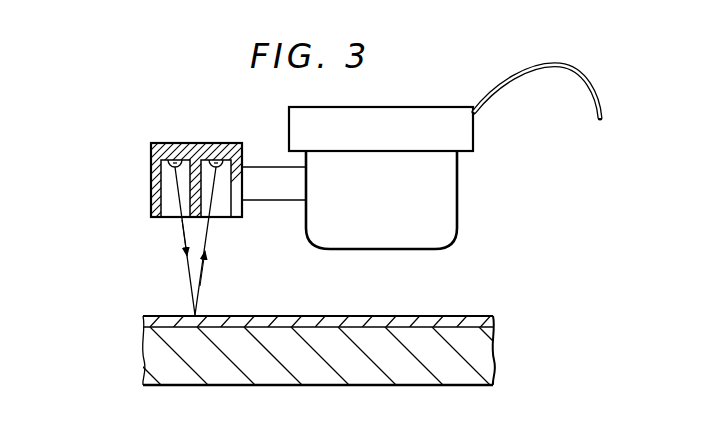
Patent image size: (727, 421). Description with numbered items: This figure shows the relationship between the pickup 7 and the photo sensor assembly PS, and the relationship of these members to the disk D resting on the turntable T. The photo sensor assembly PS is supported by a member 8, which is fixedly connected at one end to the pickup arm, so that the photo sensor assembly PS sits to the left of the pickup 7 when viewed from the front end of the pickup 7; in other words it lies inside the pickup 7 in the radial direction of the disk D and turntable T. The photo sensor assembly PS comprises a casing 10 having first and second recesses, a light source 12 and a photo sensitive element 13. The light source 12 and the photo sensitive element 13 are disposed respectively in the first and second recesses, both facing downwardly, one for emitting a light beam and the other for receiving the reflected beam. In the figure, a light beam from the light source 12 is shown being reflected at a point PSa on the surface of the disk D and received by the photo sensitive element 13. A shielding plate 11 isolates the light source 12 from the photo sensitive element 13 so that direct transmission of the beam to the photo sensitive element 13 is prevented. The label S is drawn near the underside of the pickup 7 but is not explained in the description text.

The pickup 7 is at (448, 186).
The member 8 is at (263, 185).
The casing 10 is at (150, 153).
The shielding plate 11 is at (197, 161).
The light source 12 is at (176, 161).
The photo sensitive element 13 is at (216, 153).
The photo sensor assembly PS is at (140, 178).
The reflection point PSa is at (186, 312).
The head contact surface S is at (380, 250).
The turntable T is at (485, 341).
The disk D is at (459, 323).